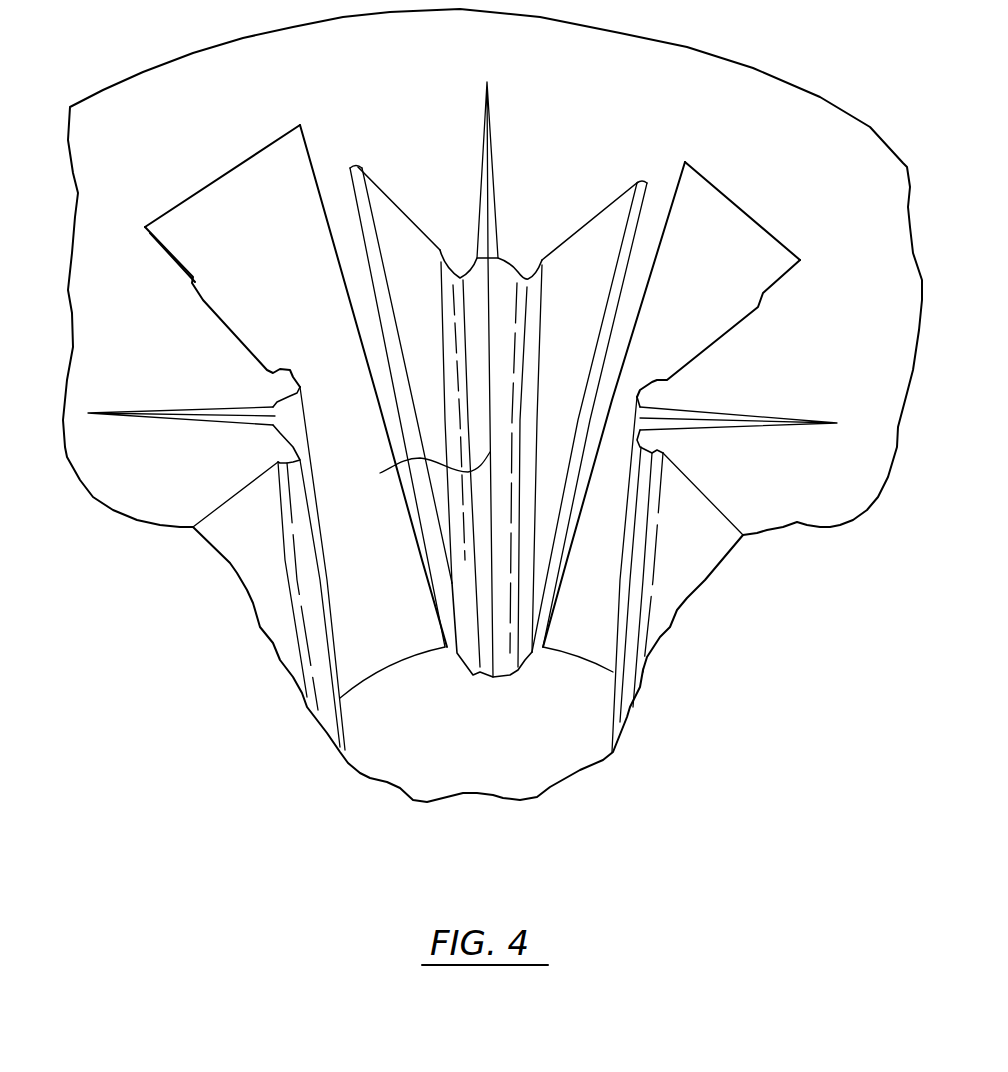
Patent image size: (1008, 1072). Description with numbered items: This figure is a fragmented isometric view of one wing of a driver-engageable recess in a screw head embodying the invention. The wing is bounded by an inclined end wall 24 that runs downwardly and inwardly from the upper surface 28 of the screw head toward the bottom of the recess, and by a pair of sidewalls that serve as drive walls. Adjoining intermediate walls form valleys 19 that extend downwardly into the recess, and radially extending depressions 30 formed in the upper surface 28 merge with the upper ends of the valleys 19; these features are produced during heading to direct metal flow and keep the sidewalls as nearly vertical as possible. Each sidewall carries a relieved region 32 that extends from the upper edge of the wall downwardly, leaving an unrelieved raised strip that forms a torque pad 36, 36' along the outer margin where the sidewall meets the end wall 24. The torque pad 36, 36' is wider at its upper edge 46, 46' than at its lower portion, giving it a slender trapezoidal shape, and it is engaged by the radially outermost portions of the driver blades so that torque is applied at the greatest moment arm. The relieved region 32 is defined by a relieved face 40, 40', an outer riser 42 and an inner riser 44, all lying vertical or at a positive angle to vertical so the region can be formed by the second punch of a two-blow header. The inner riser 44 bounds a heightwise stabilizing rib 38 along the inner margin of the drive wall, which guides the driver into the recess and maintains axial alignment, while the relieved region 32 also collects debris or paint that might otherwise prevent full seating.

The valley 19 is at (393, 467).
The end wall 24 is at (202, 213).
The upper surface 28 is at (610, 65).
The radially extending depression 30 is at (483, 163).
The relieved region 32 is at (405, 316).
The torque pad 36 is at (328, 370).
The torque pad 36' is at (667, 393).
The stabilizing rib 38 is at (447, 297).
The relieved face 40 is at (399, 195).
The relieved face 40' is at (599, 202).
The outer riser 42 is at (362, 200).
The inner riser 44 is at (282, 503).
The upper edge of torque pad 46 is at (472, 233).
The upper edge of torque pad 46' is at (140, 254).